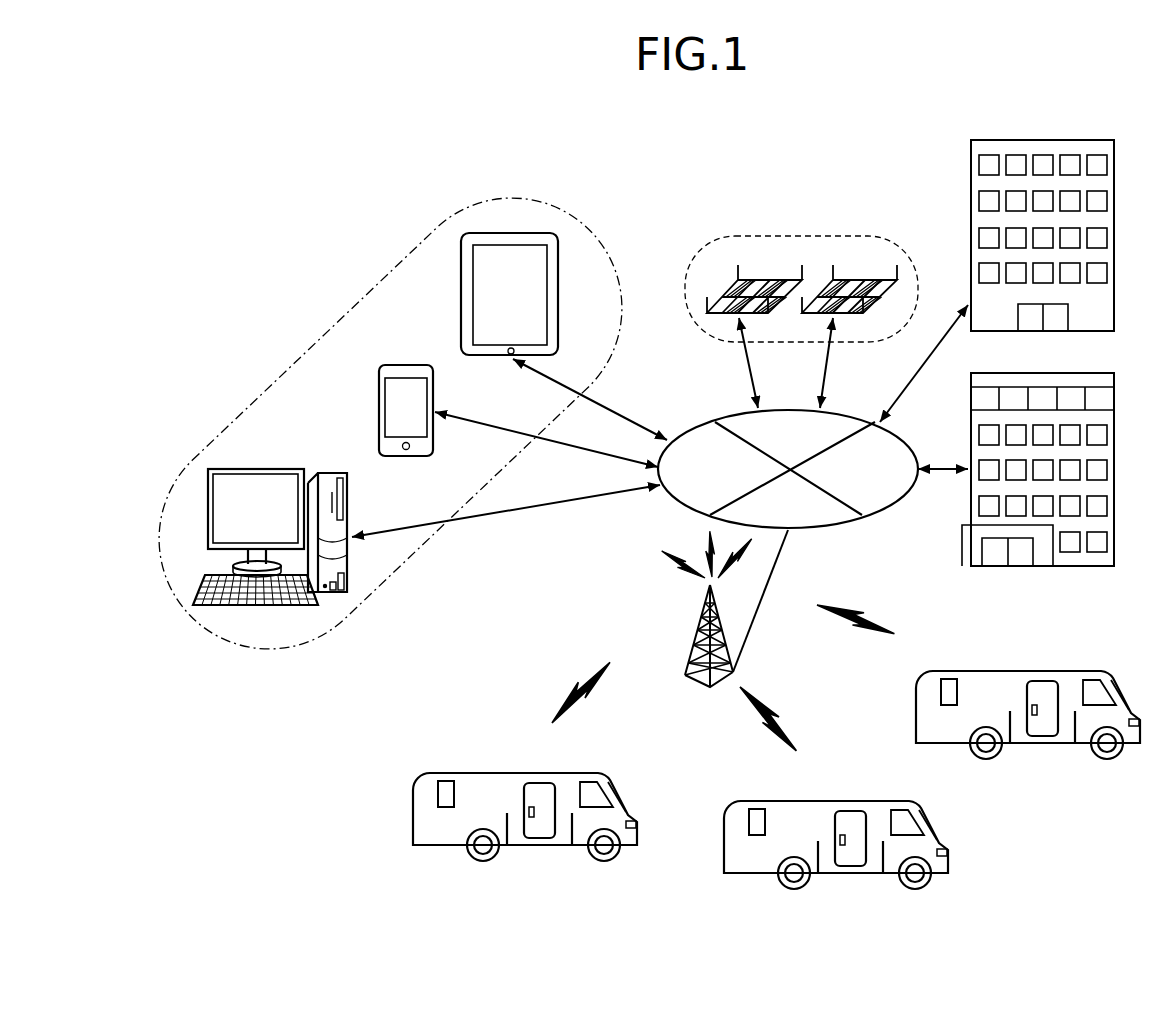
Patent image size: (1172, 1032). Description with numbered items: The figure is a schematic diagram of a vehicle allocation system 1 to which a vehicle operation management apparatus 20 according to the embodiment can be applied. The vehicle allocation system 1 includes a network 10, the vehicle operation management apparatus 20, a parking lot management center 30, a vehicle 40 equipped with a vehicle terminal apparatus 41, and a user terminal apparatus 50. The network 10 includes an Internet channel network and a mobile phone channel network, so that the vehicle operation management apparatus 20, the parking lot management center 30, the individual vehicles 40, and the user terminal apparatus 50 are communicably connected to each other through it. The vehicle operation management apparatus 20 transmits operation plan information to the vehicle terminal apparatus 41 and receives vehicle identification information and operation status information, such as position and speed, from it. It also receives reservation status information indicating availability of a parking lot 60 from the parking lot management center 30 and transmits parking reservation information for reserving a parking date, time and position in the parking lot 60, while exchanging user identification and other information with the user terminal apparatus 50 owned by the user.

The vehicle allocation system 1 is at (789, 151).
The network 10 is at (789, 408).
The vehicle operation management apparatus 20 is at (1115, 236).
The parking lot management center 30 is at (1115, 471).
The vehicle 40 is at (523, 772).
The vehicle terminal apparatus 41 is at (444, 780).
The user terminal apparatus 50 is at (513, 195).
The parking lot 60 is at (801, 235).